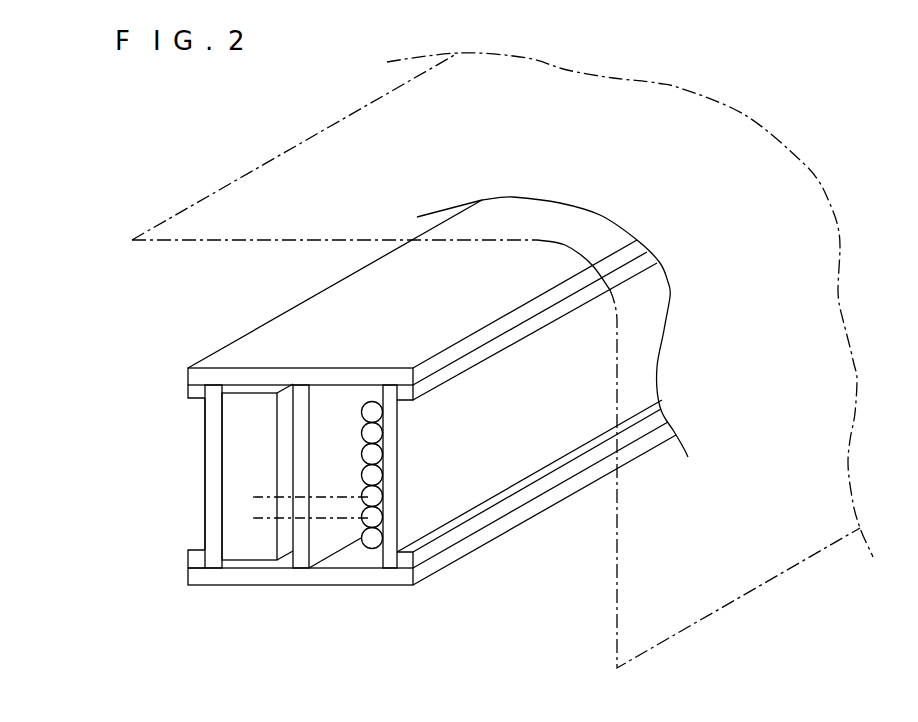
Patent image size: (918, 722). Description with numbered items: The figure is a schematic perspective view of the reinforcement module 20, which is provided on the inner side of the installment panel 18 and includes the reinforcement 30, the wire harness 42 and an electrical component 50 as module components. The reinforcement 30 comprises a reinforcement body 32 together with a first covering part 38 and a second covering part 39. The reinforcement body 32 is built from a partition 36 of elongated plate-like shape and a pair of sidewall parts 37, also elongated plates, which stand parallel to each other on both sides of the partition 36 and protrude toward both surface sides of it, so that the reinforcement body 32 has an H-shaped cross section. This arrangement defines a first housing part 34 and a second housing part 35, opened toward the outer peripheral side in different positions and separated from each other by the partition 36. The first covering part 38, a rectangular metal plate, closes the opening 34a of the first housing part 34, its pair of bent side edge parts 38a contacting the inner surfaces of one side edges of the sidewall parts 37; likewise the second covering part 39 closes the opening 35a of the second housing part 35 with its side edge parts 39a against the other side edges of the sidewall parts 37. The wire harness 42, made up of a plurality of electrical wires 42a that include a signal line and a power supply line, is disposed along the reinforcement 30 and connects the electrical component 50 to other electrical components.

The installment panel 18 is at (263, 177).
The reinforcement module 20 is at (245, 325).
The reinforcement 30 is at (310, 298).
The reinforcement body 32 is at (310, 585).
The first housing part 34 is at (338, 563).
The opening 34a is at (437, 553).
The second housing part 35 is at (268, 562).
The opening 35a is at (188, 568).
The partition 36 is at (325, 395).
The sidewall parts 37 is at (378, 370).
The first covering part 38 is at (535, 462).
The side edge parts 38a is at (463, 523).
The second covering part 39 is at (205, 448).
The side edge parts 39a is at (188, 398).
The wire harness 42 is at (382, 450).
The electrical wires 42a is at (358, 477).
The electrical component 50 is at (230, 560).